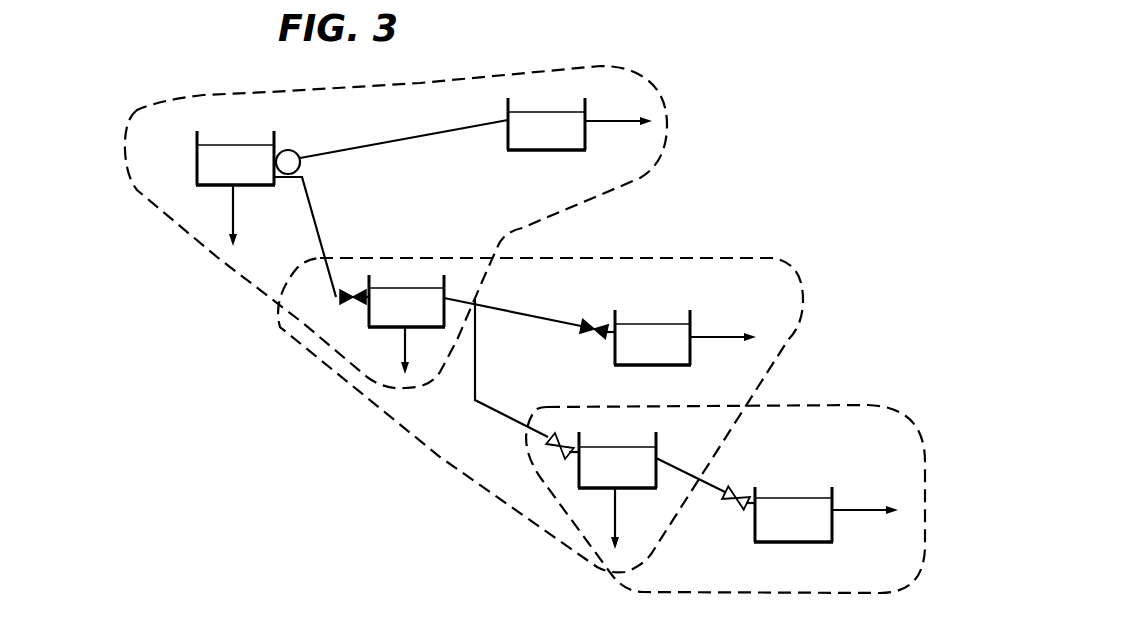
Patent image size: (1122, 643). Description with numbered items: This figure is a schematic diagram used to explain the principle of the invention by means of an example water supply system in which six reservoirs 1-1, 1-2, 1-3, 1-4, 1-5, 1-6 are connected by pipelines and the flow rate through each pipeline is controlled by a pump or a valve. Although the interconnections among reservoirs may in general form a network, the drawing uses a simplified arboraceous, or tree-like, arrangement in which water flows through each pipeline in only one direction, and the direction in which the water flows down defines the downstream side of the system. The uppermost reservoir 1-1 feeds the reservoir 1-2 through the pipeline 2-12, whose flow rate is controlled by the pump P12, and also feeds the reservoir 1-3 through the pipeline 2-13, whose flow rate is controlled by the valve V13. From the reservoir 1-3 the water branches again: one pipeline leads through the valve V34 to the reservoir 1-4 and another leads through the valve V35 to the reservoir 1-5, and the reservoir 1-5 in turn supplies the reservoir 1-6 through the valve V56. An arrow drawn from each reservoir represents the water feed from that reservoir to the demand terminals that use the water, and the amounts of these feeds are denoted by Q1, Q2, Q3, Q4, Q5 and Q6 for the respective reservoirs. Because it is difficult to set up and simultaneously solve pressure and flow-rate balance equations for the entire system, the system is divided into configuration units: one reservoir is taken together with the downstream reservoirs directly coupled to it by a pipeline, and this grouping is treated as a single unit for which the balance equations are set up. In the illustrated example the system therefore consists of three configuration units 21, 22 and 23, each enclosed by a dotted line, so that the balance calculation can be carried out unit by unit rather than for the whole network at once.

The configuration unit 21 is at (856, 404).
The configuration unit 22 is at (780, 262).
The configuration unit 23 is at (662, 97).
The reservoir 1-1 is at (197, 159).
The reservoir 1-2 is at (530, 150).
The reservoir 1-3 is at (370, 327).
The reservoir 1-4 is at (618, 355).
The reservoir 1-5 is at (580, 478).
The reservoir 1-6 is at (757, 530).
The pump P12 is at (292, 150).
The pipeline 2-12 is at (393, 138).
The pipeline 2-13 is at (312, 212).
The valve V13 is at (350, 303).
The valve V34 is at (594, 323).
The valve V35 is at (558, 440).
The valve V56 is at (735, 484).
The water feed amount Q1 is at (246, 217).
The water feed amount Q2 is at (618, 135).
The water feed amount Q3 is at (417, 351).
The water feed amount Q4 is at (723, 326).
The water feed amount Q5 is at (628, 519).
The water feed amount Q6 is at (865, 499).